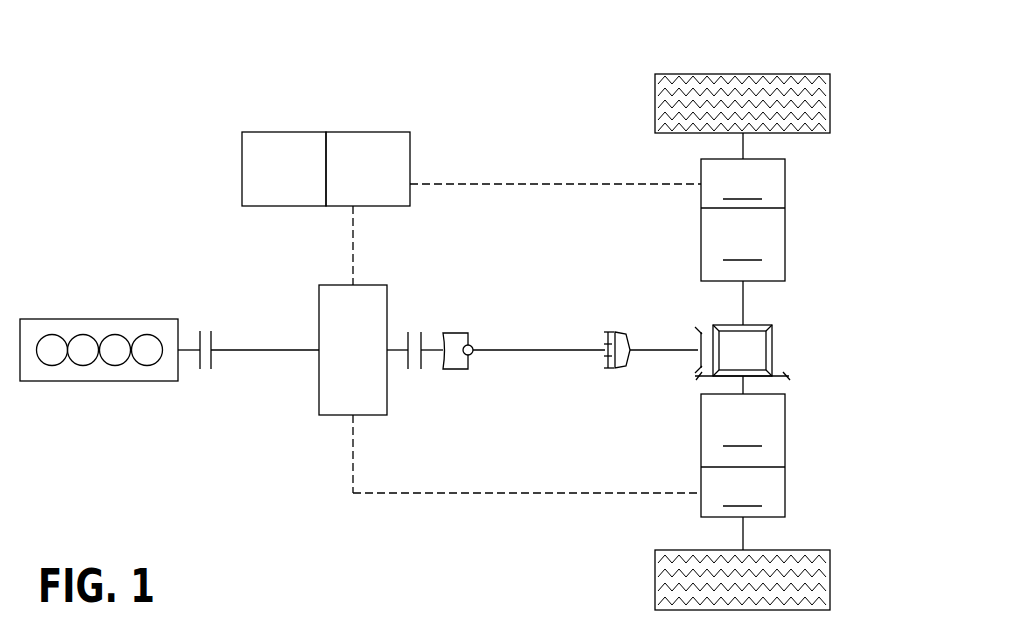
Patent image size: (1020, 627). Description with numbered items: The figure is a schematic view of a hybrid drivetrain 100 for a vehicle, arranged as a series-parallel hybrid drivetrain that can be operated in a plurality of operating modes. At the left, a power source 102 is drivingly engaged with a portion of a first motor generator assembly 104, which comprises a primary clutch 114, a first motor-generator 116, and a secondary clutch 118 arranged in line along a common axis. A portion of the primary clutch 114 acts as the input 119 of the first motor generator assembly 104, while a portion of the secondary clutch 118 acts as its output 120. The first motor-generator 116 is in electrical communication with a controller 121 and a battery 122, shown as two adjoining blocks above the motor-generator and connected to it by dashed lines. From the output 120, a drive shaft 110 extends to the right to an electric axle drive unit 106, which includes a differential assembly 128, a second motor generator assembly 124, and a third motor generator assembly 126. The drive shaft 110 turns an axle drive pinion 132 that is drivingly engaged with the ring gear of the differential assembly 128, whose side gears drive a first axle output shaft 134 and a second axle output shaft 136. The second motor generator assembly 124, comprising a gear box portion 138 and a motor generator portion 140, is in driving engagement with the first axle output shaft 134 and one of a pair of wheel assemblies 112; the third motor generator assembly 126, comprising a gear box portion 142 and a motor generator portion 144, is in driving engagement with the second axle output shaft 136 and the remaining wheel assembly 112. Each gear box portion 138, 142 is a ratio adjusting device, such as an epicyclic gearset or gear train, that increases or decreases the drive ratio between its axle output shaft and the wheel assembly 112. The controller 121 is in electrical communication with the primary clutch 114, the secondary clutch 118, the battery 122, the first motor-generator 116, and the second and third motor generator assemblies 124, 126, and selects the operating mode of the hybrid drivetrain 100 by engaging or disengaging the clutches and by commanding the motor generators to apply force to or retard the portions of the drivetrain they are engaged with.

The hybrid drivetrain 100 is at (745, 52).
The power source 102 is at (70, 317).
The first motor generator assembly 104 is at (132, 185).
The electric axle drive unit 106 is at (630, 160).
The drive shaft 110 is at (510, 348).
The wheel assemblies 112 is at (831, 100).
The primary clutch 114 is at (198, 367).
The first motor-generator 116 is at (387, 400).
The secondary clutch 118 is at (422, 338).
The input 119 is at (265, 352).
The output 120 is at (398, 346).
The controller 121 is at (365, 130).
The battery 122 is at (283, 130).
The second motor generator assembly 124 is at (795, 455).
The third motor generator assembly 126 is at (795, 215).
The differential assembly 128 is at (774, 340).
The axle drive pinion 132 is at (657, 346).
The first axle output shaft 134 is at (744, 383).
The second axle output shaft 136 is at (744, 290).
The gear box portion 138 is at (742, 432).
The motor generator portion 140 is at (742, 492).
The gear box portion 142 is at (742, 246).
The motor generator portion 144 is at (742, 185).